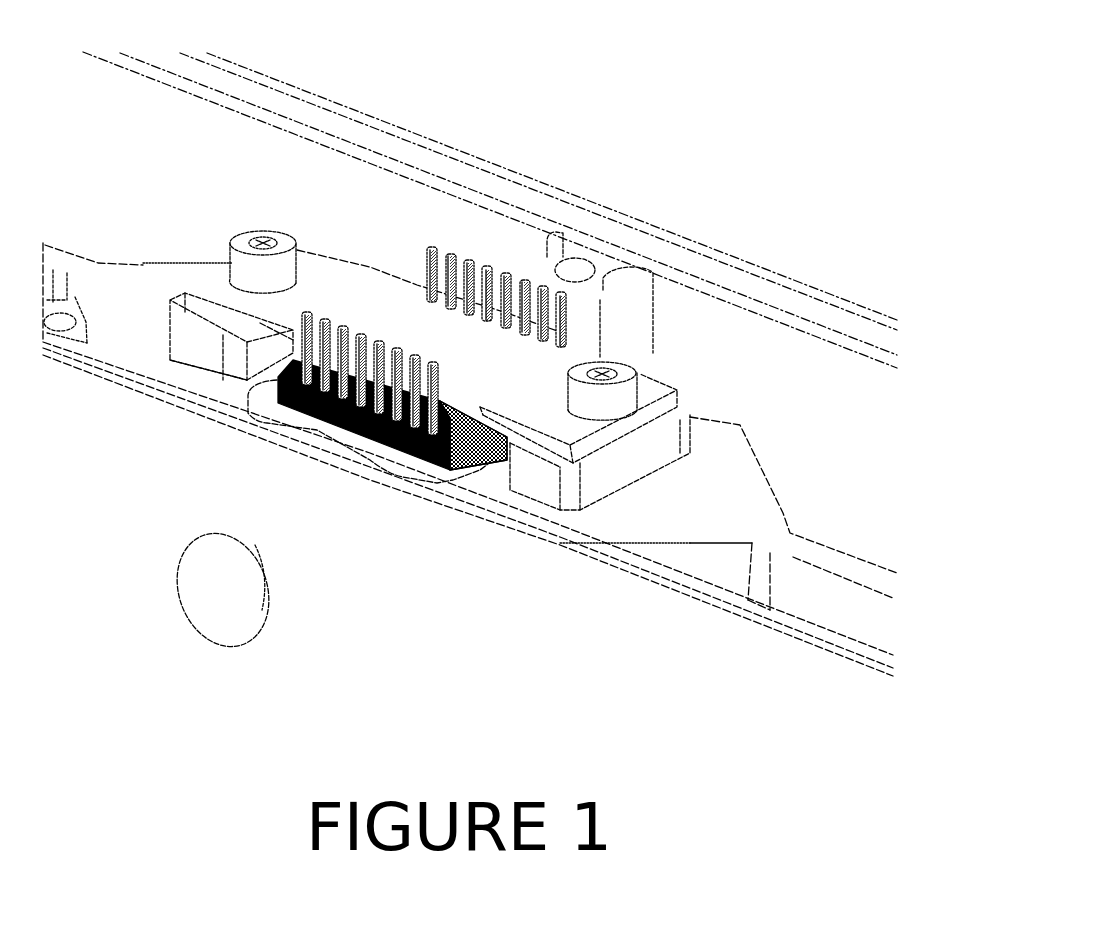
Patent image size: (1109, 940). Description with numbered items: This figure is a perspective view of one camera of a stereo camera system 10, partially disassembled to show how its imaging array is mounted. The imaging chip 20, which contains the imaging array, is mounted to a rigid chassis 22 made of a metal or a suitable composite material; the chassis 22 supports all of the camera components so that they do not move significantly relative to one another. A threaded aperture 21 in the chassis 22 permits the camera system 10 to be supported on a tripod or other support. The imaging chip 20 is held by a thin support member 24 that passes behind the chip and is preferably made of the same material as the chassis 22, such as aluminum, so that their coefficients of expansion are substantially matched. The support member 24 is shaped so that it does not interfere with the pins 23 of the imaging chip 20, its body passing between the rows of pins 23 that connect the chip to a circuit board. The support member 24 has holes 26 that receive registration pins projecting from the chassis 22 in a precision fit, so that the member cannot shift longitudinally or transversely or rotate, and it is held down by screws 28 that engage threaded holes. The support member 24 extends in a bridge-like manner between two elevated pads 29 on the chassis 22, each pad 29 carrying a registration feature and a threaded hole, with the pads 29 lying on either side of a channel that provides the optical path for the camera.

The stereo camera system 10 is at (793, 98).
The imaging chip 20 is at (460, 463).
The threaded aperture 21 is at (247, 628).
The chassis 22 is at (722, 478).
The pins 23 is at (450, 262).
The support member 24 is at (380, 300).
The holes 26 is at (247, 300).
The screws 28 is at (238, 268).
The elevated pads 29 is at (610, 472).